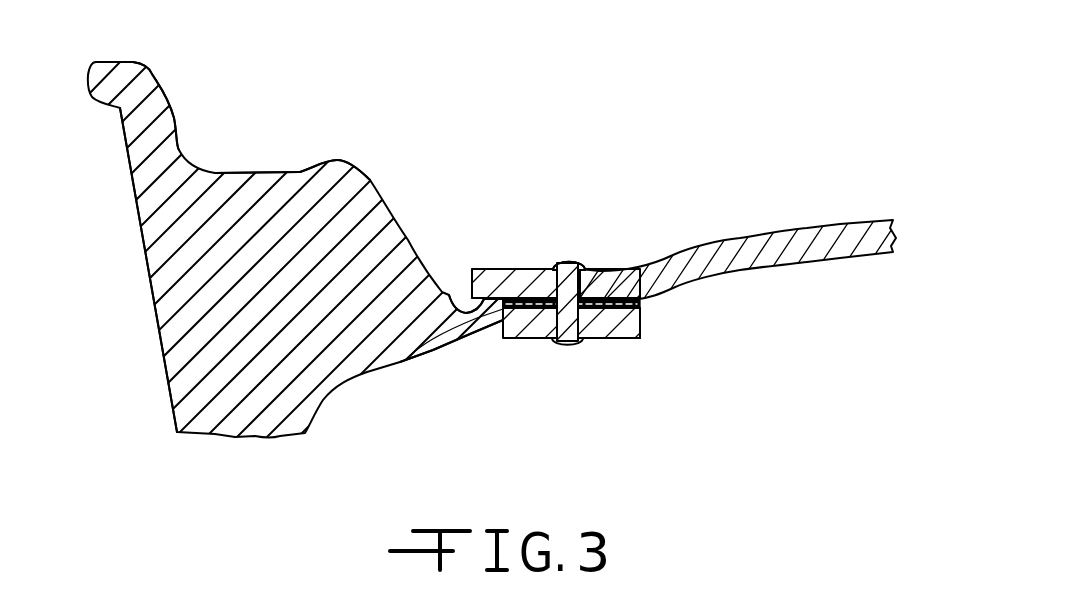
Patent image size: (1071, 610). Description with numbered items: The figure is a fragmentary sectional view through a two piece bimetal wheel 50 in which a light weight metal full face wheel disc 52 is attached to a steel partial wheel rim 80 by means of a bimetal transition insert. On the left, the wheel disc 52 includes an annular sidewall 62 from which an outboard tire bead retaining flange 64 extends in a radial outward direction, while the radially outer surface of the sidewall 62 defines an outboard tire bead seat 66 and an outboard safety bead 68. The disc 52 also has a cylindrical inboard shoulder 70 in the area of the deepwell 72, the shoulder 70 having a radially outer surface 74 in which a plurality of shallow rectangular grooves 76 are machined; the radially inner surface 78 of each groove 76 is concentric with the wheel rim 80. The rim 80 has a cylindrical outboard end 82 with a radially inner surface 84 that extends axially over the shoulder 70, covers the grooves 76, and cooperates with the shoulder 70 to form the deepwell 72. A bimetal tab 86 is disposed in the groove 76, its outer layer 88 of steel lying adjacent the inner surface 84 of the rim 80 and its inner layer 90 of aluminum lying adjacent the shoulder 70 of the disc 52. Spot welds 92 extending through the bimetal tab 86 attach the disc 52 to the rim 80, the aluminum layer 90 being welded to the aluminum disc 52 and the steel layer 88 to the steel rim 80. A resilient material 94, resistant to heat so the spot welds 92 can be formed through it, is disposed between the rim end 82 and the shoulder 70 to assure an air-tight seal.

The two piece bimetal wheel 50 is at (327, 62).
The full face wheel disc 52 is at (195, 285).
The annular sidewall 62 is at (170, 398).
The outboard tire bead retaining flange 64 is at (172, 133).
The outboard tire bead seat 66 is at (237, 185).
The outboard safety bead 68 is at (350, 162).
The cylindrical inboard shoulder 70 is at (557, 341).
The deepwell 72 is at (600, 153).
The radially outer surface 74 is at (450, 295).
The grooves 76 is at (497, 317).
The radially inner surface of the groove 78 is at (523, 313).
The partial wheel rim 80 is at (740, 240).
The cylindrical outboard end 82 is at (535, 275).
The radially inner surface 84 is at (522, 270).
The bimetal tabs 86 is at (601, 312).
The outer layer 88 is at (640, 302).
The inner layer 90 is at (640, 310).
The spot welds 92 is at (578, 262).
The resilient material 94 is at (487, 292).